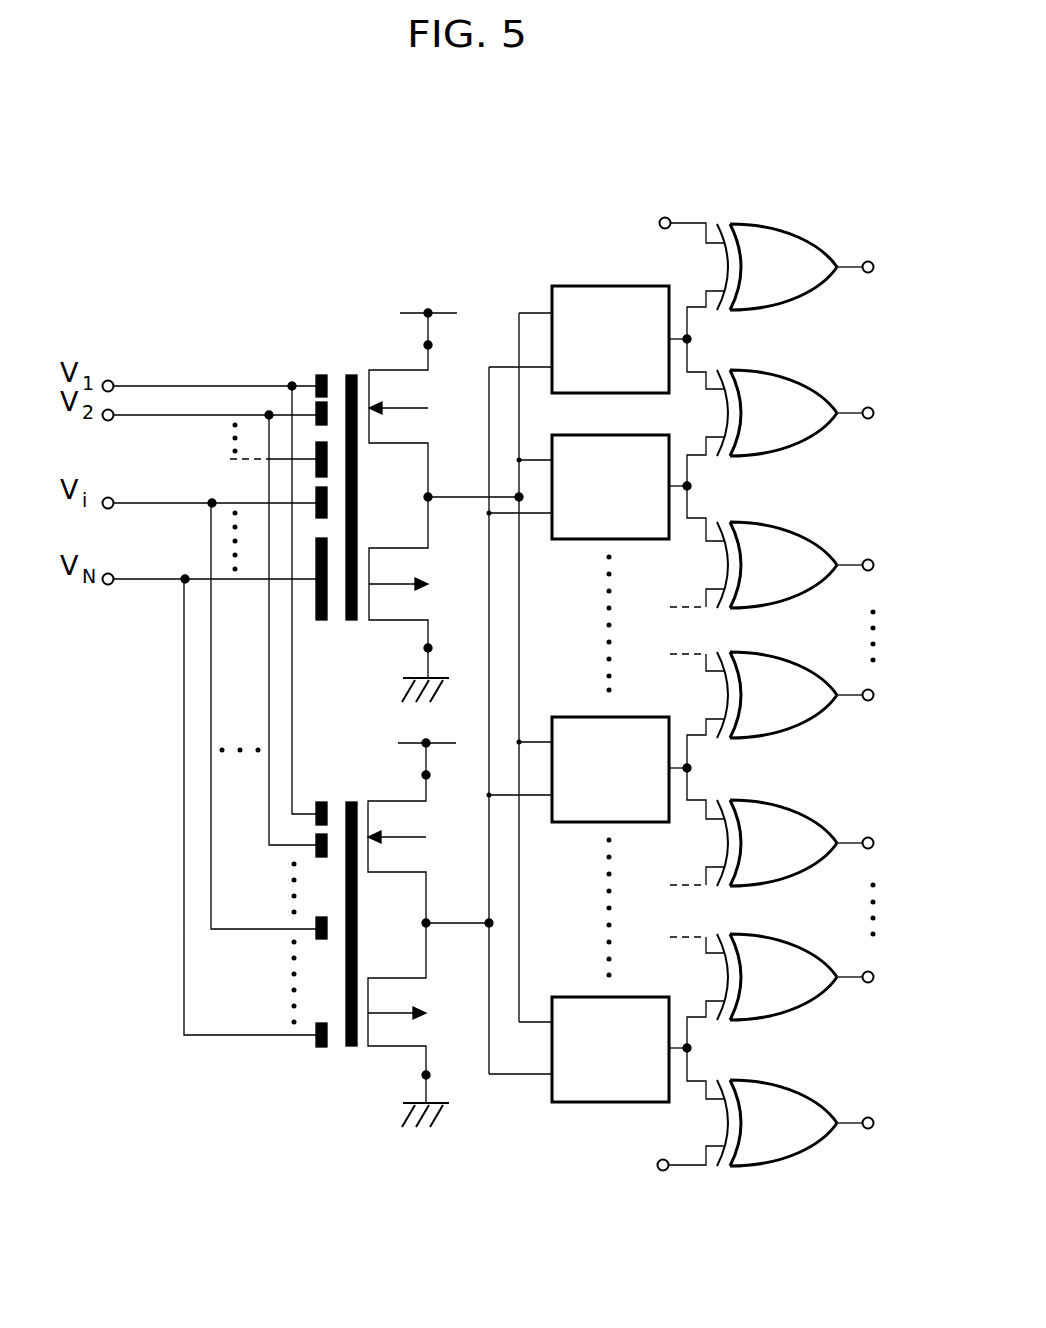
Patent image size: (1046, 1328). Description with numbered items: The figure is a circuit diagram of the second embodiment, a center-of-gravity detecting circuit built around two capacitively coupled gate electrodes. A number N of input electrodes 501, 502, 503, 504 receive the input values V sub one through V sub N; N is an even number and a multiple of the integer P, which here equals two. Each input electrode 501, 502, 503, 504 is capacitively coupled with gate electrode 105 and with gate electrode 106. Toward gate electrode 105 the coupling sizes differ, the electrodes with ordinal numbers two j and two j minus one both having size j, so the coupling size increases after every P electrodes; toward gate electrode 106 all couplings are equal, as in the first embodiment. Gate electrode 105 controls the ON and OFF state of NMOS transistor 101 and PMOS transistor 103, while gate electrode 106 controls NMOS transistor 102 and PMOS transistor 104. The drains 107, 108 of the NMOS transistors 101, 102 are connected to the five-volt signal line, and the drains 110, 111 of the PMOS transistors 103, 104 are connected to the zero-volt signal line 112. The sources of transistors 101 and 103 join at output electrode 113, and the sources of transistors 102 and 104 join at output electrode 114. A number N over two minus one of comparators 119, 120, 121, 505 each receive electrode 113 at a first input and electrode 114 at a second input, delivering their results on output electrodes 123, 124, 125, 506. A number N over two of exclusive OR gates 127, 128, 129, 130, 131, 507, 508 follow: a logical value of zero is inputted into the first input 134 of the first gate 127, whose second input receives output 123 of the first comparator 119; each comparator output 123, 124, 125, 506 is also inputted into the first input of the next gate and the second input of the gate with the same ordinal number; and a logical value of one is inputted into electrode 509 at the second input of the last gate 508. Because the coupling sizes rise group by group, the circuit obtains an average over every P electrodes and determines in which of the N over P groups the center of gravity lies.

The NMOS transistor 101 is at (424, 408).
The NMOS transistor 102 is at (422, 837).
The PMOS transistor 103 is at (424, 584).
The PMOS transistor 104 is at (422, 1013).
The gate electrode 105 is at (350, 372).
The gate electrode 106 is at (350, 800).
The drain 107 is at (432, 345).
The drain 108 is at (423, 775).
The drain 110 is at (425, 648).
The drain 111 is at (423, 1075).
The 0 V signal line 112 is at (452, 1112).
The output electrode 113 is at (473, 483).
The output electrode 114 is at (457, 909).
The comparator 119 is at (580, 285).
The comparator 120 is at (572, 541).
The comparator 121 is at (565, 716).
The output electrode 123 is at (690, 339).
The output electrode 124 is at (690, 486).
The output electrode 125 is at (690, 768).
The exclusive OR gate 127 is at (790, 229).
The exclusive OR gate 128 is at (790, 375).
The exclusive OR gate 129 is at (790, 527).
The exclusive OR gate 130 is at (790, 657).
The exclusive OR gate 131 is at (790, 805).
The first input 134 is at (668, 217).
The input electrode 501 is at (184, 384).
The input electrode 502 is at (150, 417).
The input electrode 503 is at (150, 505).
The input electrode 504 is at (150, 581).
The comparator 505 is at (565, 996).
The output electrode 506 is at (690, 1048).
The exclusive OR gate 507 is at (790, 939).
The exclusive OR gate 508 is at (790, 1085).
The electrode 509 is at (685, 1171).